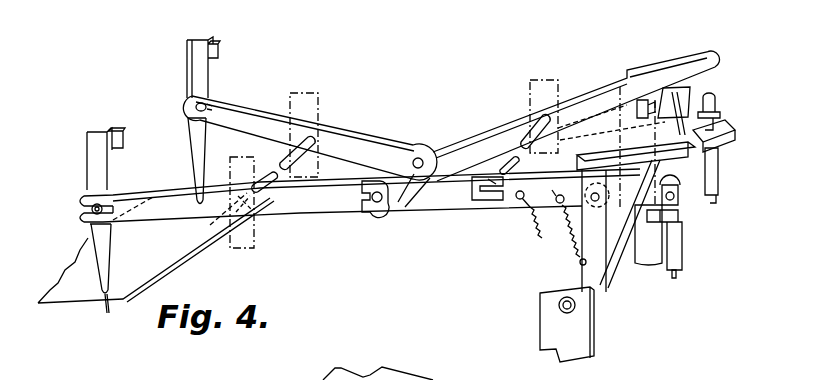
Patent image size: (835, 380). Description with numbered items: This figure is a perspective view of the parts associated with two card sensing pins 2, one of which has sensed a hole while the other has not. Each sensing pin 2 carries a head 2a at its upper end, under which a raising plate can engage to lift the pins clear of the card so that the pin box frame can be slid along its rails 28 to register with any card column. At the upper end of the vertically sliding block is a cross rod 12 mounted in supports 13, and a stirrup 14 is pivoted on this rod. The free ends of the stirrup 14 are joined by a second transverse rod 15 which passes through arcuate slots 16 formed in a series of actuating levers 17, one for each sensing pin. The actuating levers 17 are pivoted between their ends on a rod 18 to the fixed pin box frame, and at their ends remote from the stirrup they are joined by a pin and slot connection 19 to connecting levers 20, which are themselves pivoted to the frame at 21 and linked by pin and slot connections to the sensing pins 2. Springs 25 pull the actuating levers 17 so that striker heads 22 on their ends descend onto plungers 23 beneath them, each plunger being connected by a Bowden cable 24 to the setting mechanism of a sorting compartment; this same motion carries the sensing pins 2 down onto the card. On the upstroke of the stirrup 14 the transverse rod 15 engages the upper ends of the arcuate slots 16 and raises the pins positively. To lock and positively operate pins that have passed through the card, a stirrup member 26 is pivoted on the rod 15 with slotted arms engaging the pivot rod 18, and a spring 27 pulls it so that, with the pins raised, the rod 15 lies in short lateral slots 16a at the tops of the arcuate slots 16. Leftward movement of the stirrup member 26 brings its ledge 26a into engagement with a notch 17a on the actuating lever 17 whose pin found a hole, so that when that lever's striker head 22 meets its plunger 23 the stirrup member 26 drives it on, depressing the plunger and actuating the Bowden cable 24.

The sensing pin 2 is at (96, 161).
The head 2a is at (124, 131).
The cross rod 12 is at (587, 281).
The support 13 is at (548, 326).
The stirrup 14 is at (542, 297).
The transverse rod 15 is at (590, 128).
The arcuate slot 16 is at (622, 143).
The lateral slot 16a is at (645, 100).
The actuating lever 17 is at (420, 188).
The notch or shoulder 17a is at (672, 112).
The pivot rod 18 is at (473, 203).
The pin and slot connection 19 is at (372, 208).
The connecting lever 20 is at (352, 150).
The pivot 21 is at (270, 180).
The striker head 22 is at (684, 206).
The plunger 23 is at (686, 222).
The Bowden cable 24 is at (678, 277).
The spring 25 is at (540, 232).
The stirrup member 26 is at (538, 197).
The ledge or shoulder 26a is at (622, 262).
The spring 27 is at (580, 256).
The rail 28 is at (419, 371).